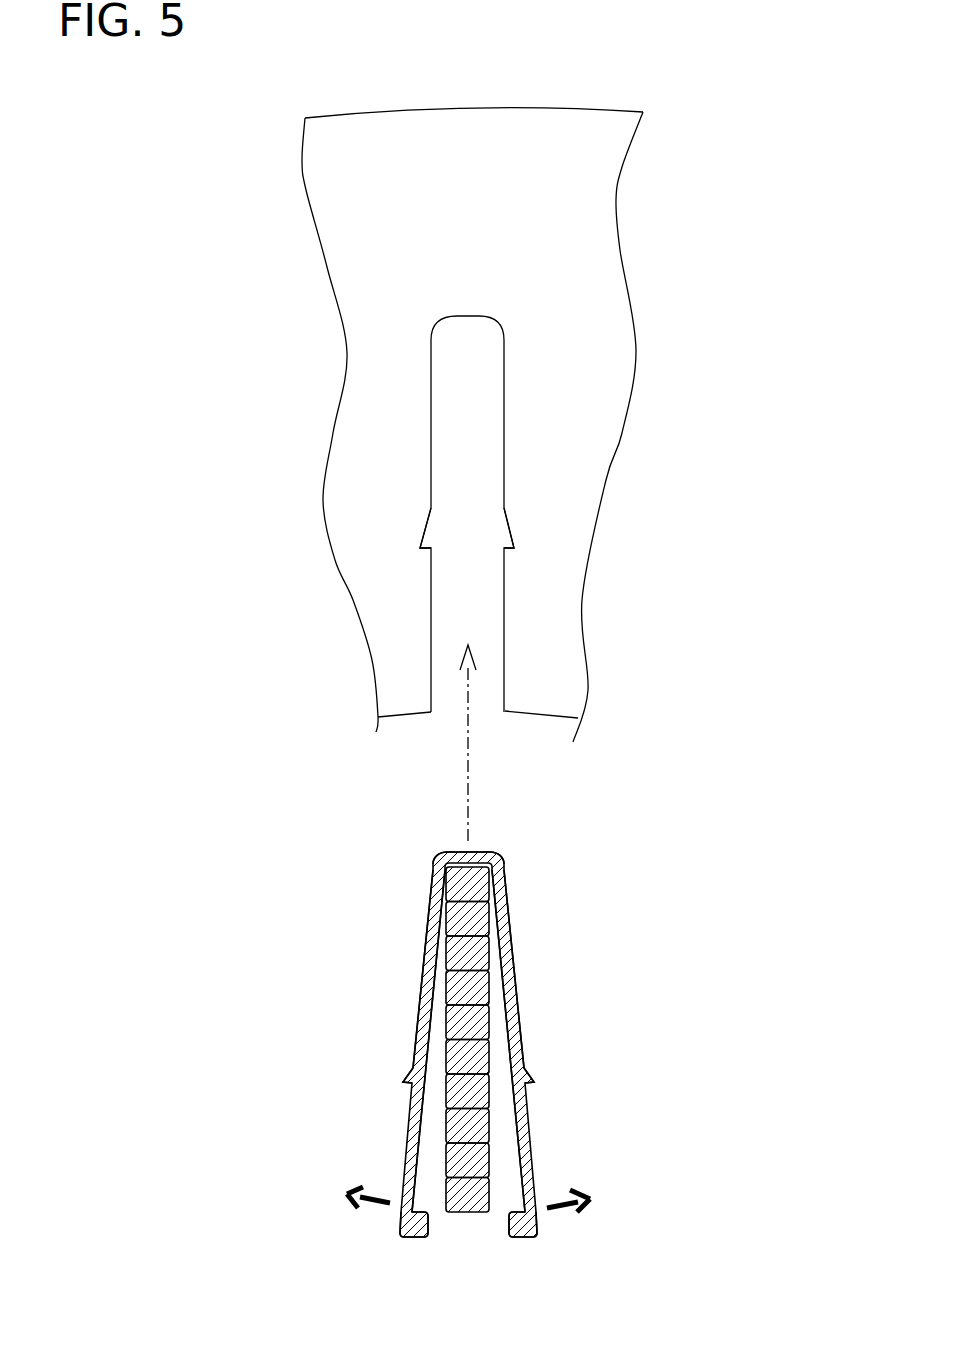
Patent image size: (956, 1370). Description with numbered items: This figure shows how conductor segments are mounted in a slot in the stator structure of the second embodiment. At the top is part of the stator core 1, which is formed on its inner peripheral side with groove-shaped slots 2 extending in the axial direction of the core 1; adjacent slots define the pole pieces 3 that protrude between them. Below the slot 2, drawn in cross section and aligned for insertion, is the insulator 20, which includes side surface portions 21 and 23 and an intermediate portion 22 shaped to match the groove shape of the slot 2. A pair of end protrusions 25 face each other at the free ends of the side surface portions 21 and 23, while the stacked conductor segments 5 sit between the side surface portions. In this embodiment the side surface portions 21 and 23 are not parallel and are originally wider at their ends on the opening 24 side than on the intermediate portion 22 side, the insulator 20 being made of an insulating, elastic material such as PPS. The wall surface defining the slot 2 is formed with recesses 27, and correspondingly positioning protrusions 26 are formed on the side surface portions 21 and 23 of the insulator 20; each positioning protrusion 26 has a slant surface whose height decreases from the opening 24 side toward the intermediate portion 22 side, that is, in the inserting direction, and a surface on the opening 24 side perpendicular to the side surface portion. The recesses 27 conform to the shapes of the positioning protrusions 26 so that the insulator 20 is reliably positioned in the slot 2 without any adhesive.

The stator core 1 is at (582, 127).
The slot 2 is at (506, 472).
The pole piece 3 is at (353, 438).
The magnet stack 5 is at (485, 1027).
The insulator 20 is at (500, 853).
The side surface portion 21 is at (423, 1000).
The intermediate portion 22 is at (468, 858).
The side surface portion 23 is at (513, 972).
The opening 24 is at (477, 1243).
The end protrusion 25 is at (415, 1238).
The positioning protrusion 26 is at (404, 1072).
The recess 27 is at (428, 531).